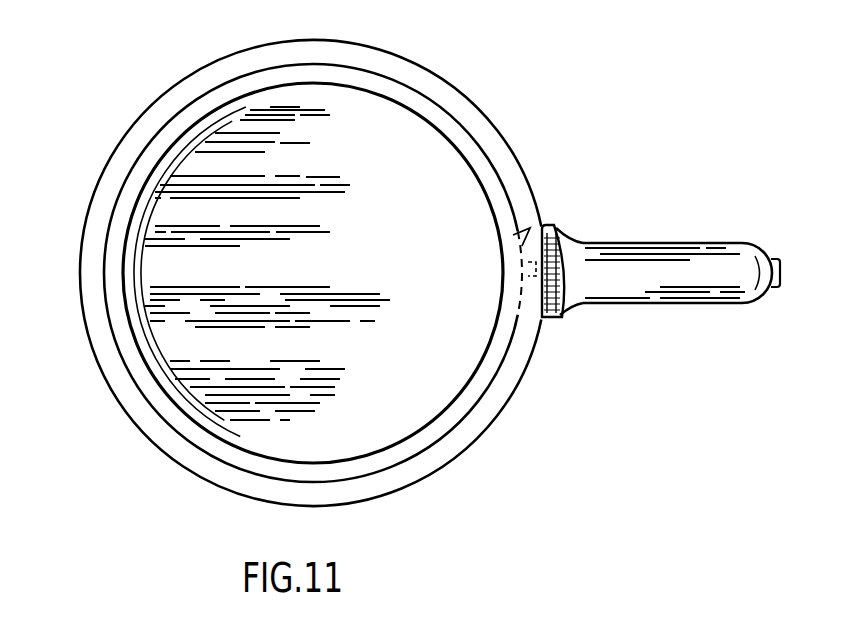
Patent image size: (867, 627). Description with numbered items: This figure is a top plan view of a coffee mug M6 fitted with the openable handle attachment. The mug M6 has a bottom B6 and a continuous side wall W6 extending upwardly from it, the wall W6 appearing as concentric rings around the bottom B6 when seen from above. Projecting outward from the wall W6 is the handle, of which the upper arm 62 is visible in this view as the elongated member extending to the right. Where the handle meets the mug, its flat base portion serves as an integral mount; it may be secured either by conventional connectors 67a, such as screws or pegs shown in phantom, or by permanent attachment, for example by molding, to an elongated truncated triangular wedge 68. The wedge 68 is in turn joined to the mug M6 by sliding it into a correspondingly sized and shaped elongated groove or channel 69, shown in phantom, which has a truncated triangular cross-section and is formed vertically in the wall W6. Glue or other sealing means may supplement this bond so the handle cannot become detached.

The coffee mug M6 is at (94, 169).
The side wall W6 is at (505, 145).
The bottom B6 is at (403, 259).
The truncated triangular wedge 68 is at (544, 226).
The connectors 67a is at (554, 316).
The upper arm 62 is at (687, 268).
The groove or channel 69 is at (521, 295).